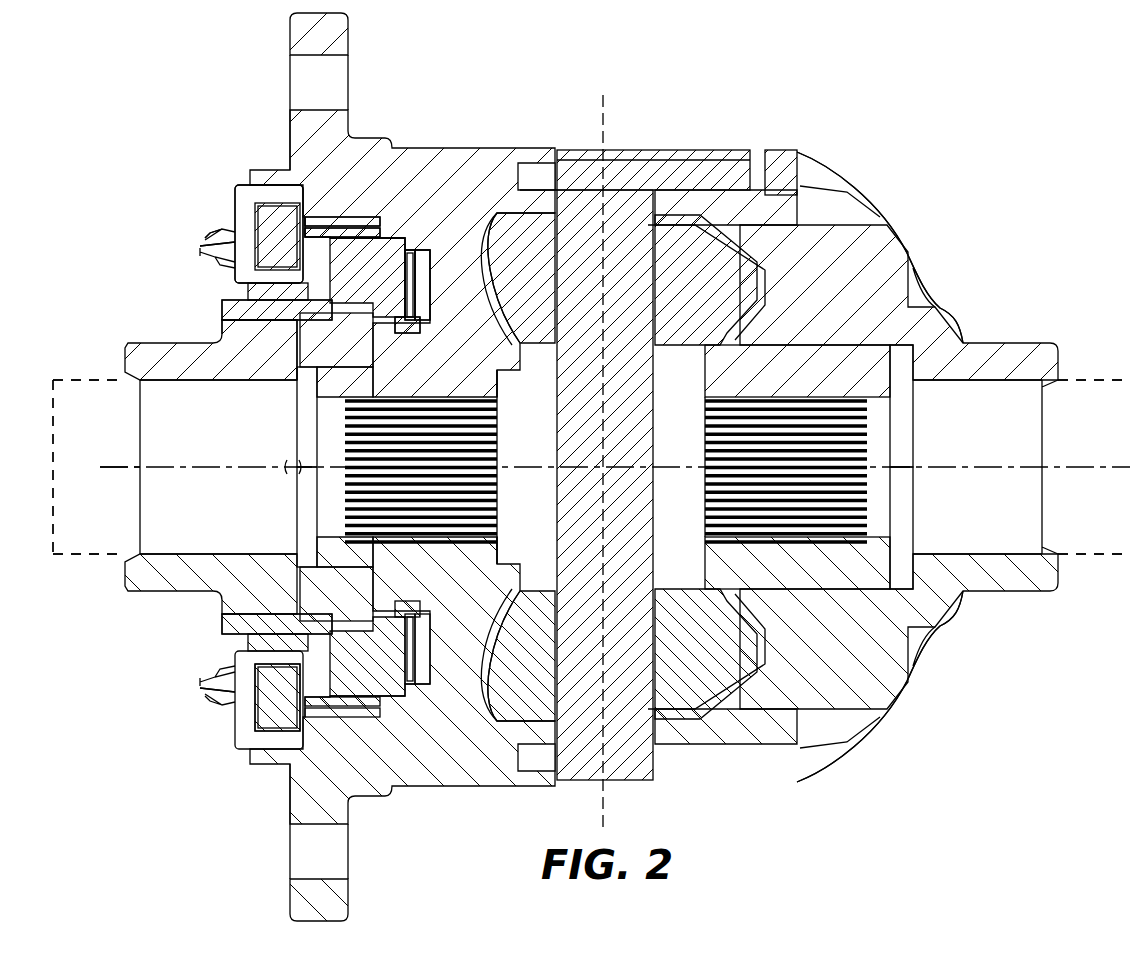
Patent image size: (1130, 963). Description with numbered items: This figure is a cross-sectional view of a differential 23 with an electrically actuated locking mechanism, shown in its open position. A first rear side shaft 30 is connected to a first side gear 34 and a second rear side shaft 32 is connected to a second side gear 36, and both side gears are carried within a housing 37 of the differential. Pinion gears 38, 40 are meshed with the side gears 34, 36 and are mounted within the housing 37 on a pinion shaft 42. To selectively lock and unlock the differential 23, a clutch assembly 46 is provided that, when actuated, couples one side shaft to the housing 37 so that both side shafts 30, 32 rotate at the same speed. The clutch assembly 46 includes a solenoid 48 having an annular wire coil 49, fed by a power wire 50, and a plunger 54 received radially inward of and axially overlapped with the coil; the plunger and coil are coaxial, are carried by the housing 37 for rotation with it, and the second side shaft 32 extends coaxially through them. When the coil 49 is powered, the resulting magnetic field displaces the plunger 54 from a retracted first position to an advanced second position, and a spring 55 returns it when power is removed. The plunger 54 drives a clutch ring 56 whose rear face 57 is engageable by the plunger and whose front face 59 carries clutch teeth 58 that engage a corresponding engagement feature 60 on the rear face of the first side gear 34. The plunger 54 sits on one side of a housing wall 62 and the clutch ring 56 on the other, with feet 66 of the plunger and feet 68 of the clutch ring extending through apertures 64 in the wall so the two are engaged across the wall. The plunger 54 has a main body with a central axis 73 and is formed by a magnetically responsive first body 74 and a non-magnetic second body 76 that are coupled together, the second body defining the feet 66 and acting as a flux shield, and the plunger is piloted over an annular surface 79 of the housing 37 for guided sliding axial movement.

The differential 23 is at (806, 135).
The first rear side shaft 30 is at (63, 390).
The second rear side shaft 32 is at (1080, 395).
The first side gear 34 is at (345, 400).
The second side gear 36 is at (870, 383).
The housing 37 is at (505, 160).
The pinion gear 38 is at (690, 250).
The pinion gear 40 is at (687, 688).
The pinion shaft 42 is at (625, 200).
The clutch assembly 46 is at (230, 283).
The solenoid 48 is at (237, 757).
The annular wire coil 49 is at (265, 245).
The power wire 50 is at (212, 210).
The plunger 54 is at (216, 302).
The spring 55 is at (413, 327).
The clutch ring 56 is at (385, 250).
The rear face 57 is at (320, 255).
The clutch teeth 58 is at (418, 258).
The front face 59 is at (410, 263).
The engagement feature 60 is at (432, 255).
The housing wall 62 is at (340, 658).
The apertures 64 is at (315, 235).
The feet 66 is at (330, 313).
The feet 68 is at (330, 233).
The central axis 73 is at (102, 467).
The first body 74 is at (250, 642).
The second body 76 is at (235, 625).
The annular surface 79 is at (243, 318).